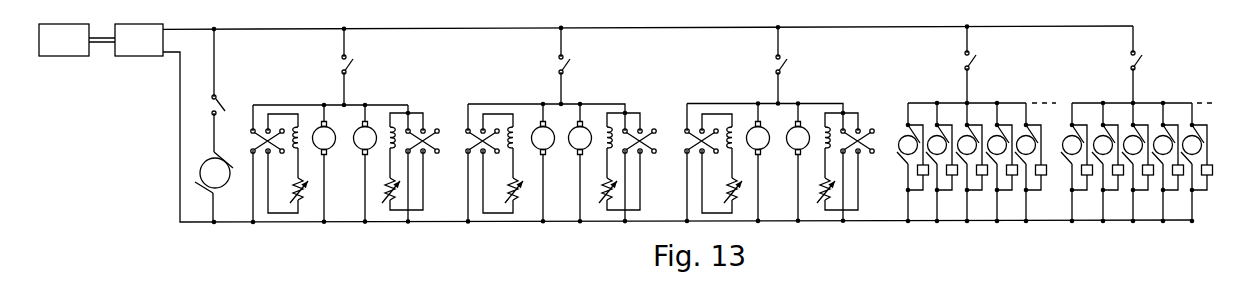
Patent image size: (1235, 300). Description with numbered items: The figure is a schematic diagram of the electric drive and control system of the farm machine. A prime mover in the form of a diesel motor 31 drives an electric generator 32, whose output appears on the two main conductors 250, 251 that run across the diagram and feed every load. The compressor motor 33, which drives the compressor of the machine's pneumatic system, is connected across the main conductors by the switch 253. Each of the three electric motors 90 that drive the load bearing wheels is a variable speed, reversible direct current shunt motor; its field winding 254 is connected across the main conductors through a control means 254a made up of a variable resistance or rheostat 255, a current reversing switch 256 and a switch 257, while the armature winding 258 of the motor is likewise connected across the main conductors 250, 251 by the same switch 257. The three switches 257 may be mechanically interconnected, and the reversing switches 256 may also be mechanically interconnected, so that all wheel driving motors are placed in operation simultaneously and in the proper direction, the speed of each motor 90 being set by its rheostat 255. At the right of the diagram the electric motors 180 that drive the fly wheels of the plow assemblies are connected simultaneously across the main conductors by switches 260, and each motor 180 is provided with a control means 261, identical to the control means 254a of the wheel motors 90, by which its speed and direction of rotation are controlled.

The diesel motor 31 is at (67, 56).
The electric generator 32 is at (147, 56).
The compressor motor 33 is at (219, 182).
The electric motor 90 is at (362, 154).
The electric motor 180 is at (901, 148).
The main conductor 250 is at (236, 30).
The main conductor 251 is at (292, 223).
The switch 253 is at (218, 101).
The field winding 254 is at (298, 127).
The control means 254a is at (243, 148).
The rheostat 255 is at (296, 204).
The current reversing switch 256 is at (279, 155).
The switch 257 is at (353, 68).
The armature winding 258 is at (329, 134).
The switch 260 is at (975, 66).
The control means 261 is at (915, 178).